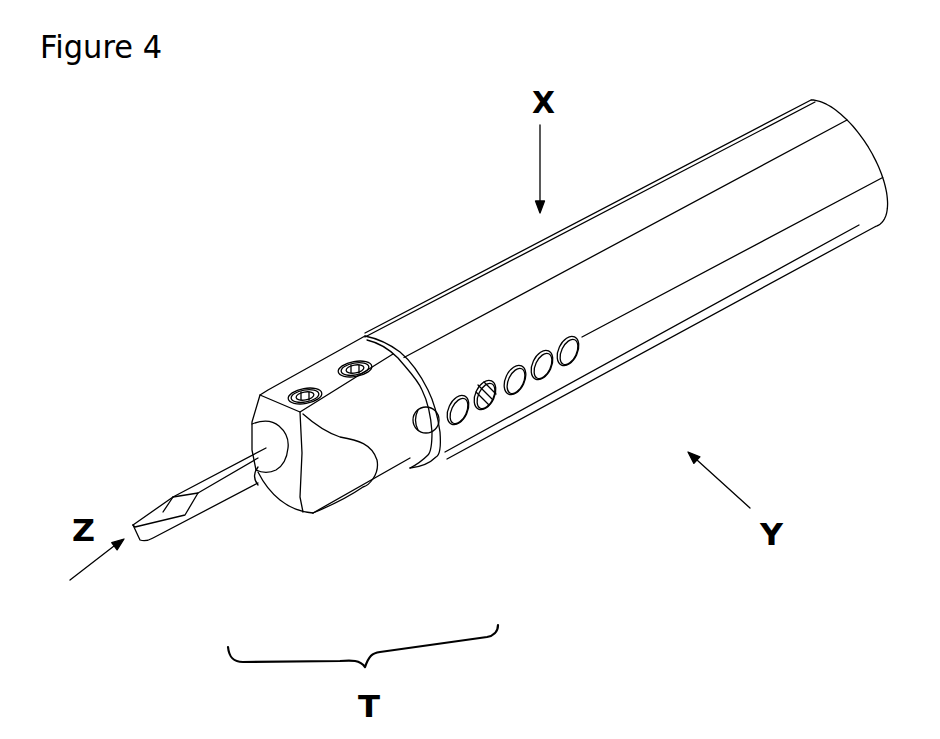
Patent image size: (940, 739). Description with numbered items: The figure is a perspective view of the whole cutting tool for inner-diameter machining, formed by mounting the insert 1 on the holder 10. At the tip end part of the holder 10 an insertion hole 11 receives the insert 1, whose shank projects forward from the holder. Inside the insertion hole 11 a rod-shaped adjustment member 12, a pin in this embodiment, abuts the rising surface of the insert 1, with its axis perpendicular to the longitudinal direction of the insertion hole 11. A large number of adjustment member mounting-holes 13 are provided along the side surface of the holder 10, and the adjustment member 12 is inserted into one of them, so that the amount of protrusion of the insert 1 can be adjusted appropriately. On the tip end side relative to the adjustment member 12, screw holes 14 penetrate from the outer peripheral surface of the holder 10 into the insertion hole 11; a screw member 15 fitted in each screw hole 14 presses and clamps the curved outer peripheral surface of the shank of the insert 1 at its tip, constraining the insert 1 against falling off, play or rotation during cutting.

The insert 1 is at (215, 524).
The holder 10 is at (417, 498).
The insertion hole 11 is at (254, 445).
The adjustment member 12 is at (487, 396).
The adjustment member mounting-holes 13 is at (568, 351).
The screw holes 14 is at (355, 366).
The screw member 15 is at (353, 370).